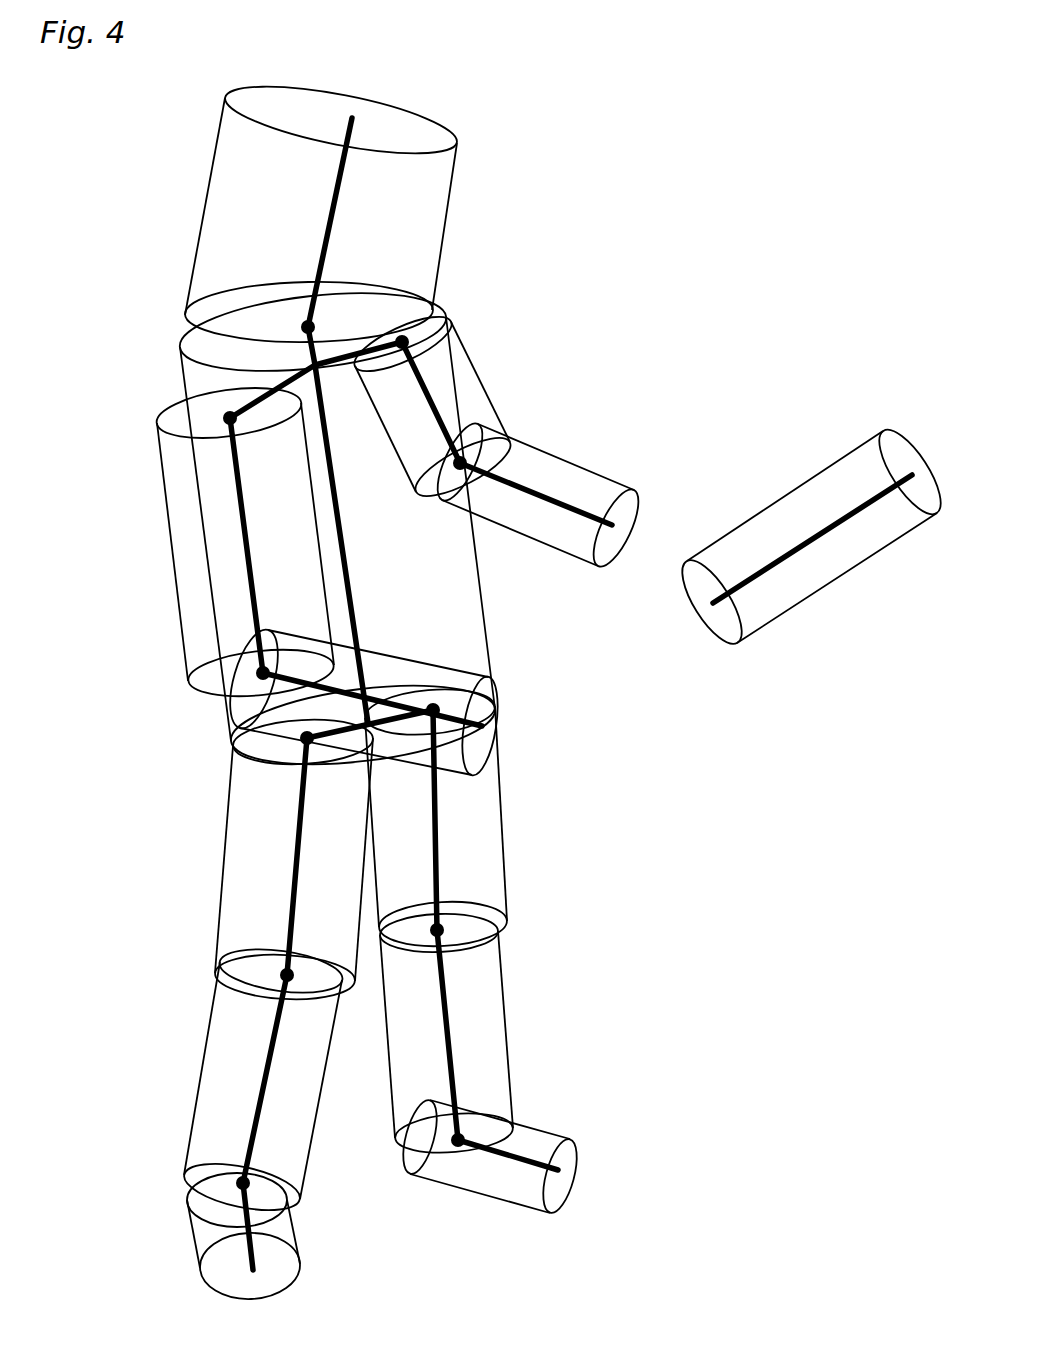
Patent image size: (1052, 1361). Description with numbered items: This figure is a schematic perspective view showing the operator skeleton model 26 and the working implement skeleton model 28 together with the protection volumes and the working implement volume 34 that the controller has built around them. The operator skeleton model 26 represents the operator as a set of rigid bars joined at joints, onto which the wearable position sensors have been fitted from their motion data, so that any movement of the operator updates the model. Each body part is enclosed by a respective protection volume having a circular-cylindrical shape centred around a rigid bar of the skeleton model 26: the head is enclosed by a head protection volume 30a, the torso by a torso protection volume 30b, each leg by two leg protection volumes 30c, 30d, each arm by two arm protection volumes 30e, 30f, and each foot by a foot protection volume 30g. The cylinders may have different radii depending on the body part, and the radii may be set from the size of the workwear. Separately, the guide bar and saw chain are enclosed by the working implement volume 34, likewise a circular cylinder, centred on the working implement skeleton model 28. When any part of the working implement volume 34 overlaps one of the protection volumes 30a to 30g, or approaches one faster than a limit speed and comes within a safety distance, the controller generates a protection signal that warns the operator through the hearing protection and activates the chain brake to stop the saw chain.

The operator skeleton model 26 is at (352, 595).
The working implement skeleton model 28 is at (780, 558).
The working implement volume 34 is at (795, 490).
The head protection volume 30a is at (425, 120).
The torso protection volume 30b is at (180, 362).
The leg protection volume 30c is at (503, 855).
The leg protection volume 30d is at (507, 1038).
The arm protection volume 30e is at (152, 438).
The arm protection volume 30f is at (490, 768).
The foot protection volume 30g is at (542, 1130).